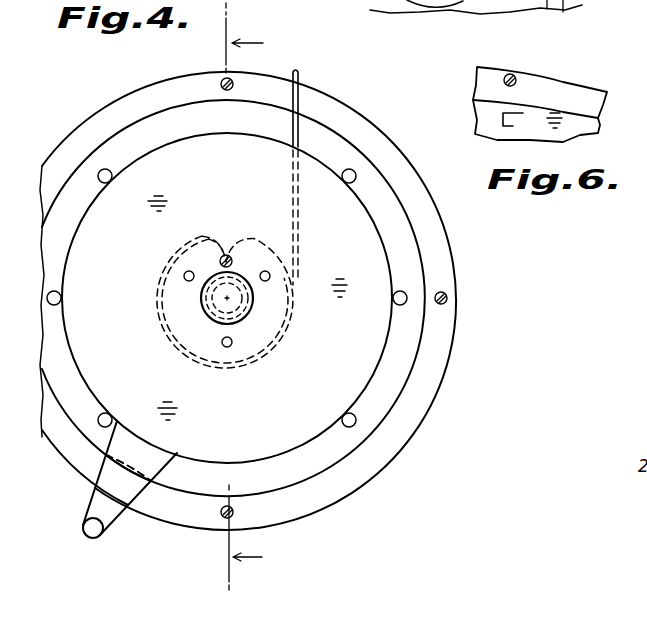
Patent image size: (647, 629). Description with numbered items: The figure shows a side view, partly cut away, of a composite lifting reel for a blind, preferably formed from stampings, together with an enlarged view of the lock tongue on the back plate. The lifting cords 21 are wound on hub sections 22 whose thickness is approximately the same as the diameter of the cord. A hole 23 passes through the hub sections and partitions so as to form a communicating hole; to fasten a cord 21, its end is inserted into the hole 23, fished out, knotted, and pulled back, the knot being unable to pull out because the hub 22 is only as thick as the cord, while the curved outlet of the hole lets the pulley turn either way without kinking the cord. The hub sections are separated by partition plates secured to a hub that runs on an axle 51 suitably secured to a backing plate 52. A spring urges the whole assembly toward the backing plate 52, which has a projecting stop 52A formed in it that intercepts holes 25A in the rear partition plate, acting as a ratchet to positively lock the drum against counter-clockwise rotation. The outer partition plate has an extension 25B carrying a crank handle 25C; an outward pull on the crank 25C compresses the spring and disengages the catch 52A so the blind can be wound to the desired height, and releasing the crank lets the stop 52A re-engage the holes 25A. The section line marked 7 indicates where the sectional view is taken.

In FIG. 4, the section line 7- 7 is at (234, 298).
In FIG. 4, the lifting cord 21 is at (301, 89).
In FIG. 4, the hub section 22 is at (196, 319).
In FIG. 4, the hole 23 is at (219, 260).
In FIG. 4, the holes 25A is at (346, 183).
In FIG. 4, the extension 25B is at (118, 504).
In FIG. 4, the crank handle 25C is at (92, 531).
In FIG. 4, the axle 51 is at (249, 309).
In FIG. 6, the backing plate 52 is at (583, 95).
In FIG. 6, the projecting stop 52A is at (512, 128).